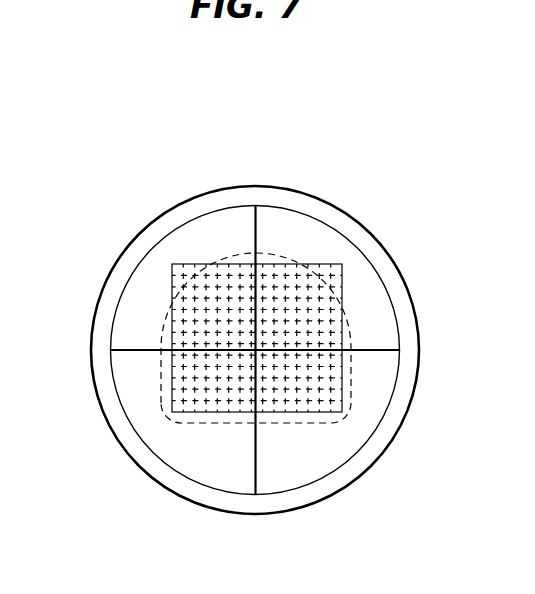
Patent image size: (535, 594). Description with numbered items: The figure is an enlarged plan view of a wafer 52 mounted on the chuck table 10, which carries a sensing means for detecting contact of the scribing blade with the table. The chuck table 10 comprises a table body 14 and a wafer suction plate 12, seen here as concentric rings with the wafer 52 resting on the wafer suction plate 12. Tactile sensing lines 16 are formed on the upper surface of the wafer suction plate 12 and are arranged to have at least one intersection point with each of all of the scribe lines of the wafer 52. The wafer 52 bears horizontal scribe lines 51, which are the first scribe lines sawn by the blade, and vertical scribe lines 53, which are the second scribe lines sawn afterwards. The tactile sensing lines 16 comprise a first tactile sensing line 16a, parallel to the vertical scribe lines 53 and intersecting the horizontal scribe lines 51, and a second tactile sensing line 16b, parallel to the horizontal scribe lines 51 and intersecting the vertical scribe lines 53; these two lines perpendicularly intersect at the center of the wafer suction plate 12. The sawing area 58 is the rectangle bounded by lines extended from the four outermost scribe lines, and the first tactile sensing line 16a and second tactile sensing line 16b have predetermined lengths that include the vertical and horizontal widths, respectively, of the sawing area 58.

The chuck table 10 is at (284, 365).
The wafer suction plate 12 is at (320, 463).
The table body 14 is at (378, 443).
The tactile sensing lines 16 is at (255, 387).
The first tactile sensing line 16a is at (250, 473).
The second tactile sensing line 16b is at (141, 342).
The horizontal scribe lines 51 is at (345, 318).
The wafer 52 is at (233, 258).
The vertical scribe lines 53 is at (330, 362).
The sawing area 58 is at (177, 293).